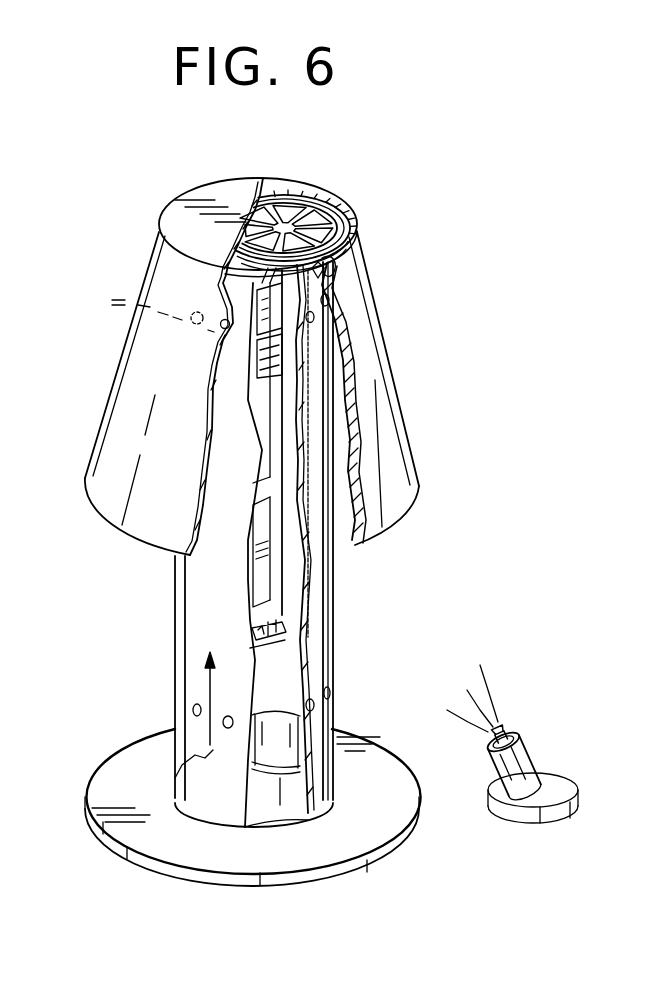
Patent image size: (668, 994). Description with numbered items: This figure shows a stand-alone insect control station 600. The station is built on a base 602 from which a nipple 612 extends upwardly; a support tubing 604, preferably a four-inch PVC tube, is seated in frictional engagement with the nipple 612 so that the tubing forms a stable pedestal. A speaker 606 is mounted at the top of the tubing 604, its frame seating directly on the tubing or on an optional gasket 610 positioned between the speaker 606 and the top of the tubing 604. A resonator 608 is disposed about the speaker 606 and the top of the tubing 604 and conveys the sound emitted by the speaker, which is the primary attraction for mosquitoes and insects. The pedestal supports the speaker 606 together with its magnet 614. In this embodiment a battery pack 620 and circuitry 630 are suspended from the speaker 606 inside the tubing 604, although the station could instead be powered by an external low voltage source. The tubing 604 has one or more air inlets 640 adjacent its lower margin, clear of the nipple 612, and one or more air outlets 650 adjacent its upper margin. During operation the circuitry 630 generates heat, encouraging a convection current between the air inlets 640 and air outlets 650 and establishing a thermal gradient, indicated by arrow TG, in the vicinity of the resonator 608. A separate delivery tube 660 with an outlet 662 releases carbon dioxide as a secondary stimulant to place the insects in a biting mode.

The insect control station 600 is at (362, 208).
The base 602 is at (147, 833).
The tubing 604 is at (322, 624).
The speaker 606 is at (276, 212).
The resonator 608 is at (392, 433).
The gasket 610 is at (315, 290).
The nipple 612 is at (290, 787).
The magnet 614 is at (255, 338).
The battery pack 620 is at (263, 568).
The circuitry 630 is at (250, 623).
The air inlets 640 is at (223, 722).
The air outlets 650 is at (332, 300).
The delivery tube 660 is at (528, 768).
The outlet 662 is at (505, 738).
The thermal gradient arrow TG is at (178, 767).